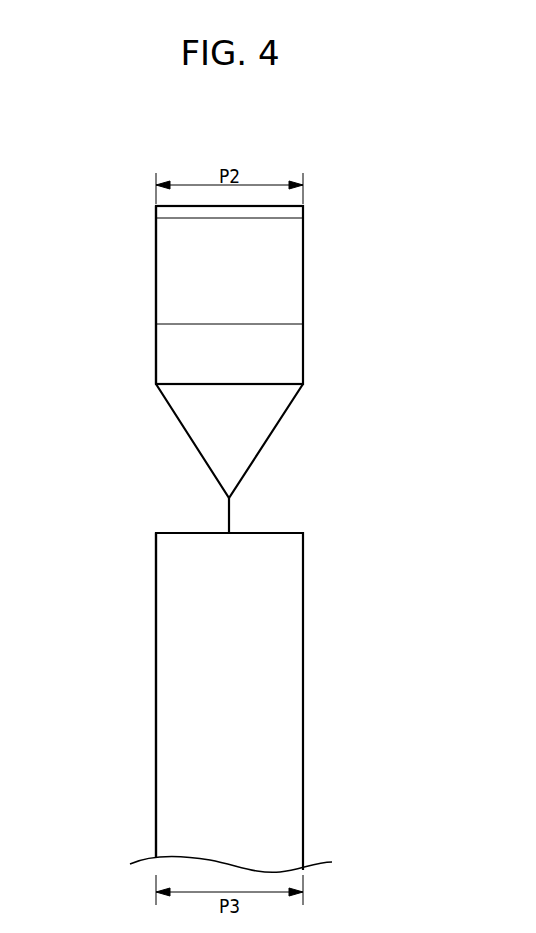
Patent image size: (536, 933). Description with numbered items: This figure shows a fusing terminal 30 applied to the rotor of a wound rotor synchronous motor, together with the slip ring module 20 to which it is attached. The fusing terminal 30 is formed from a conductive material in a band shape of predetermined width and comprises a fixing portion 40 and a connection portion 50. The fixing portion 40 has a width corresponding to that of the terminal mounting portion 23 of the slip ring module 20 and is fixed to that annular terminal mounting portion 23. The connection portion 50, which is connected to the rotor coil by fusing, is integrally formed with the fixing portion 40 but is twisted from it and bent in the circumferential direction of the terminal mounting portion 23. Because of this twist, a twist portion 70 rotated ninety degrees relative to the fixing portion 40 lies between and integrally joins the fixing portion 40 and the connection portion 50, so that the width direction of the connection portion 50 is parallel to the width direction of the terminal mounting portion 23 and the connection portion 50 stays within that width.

The slip ring module 20 is at (318, 670).
The terminal mounting portion 23 is at (156, 604).
The fusing terminal 30 is at (318, 288).
The fixing portion 40 is at (231, 515).
The connection portion 50 is at (156, 268).
The twist portion 70 is at (190, 443).